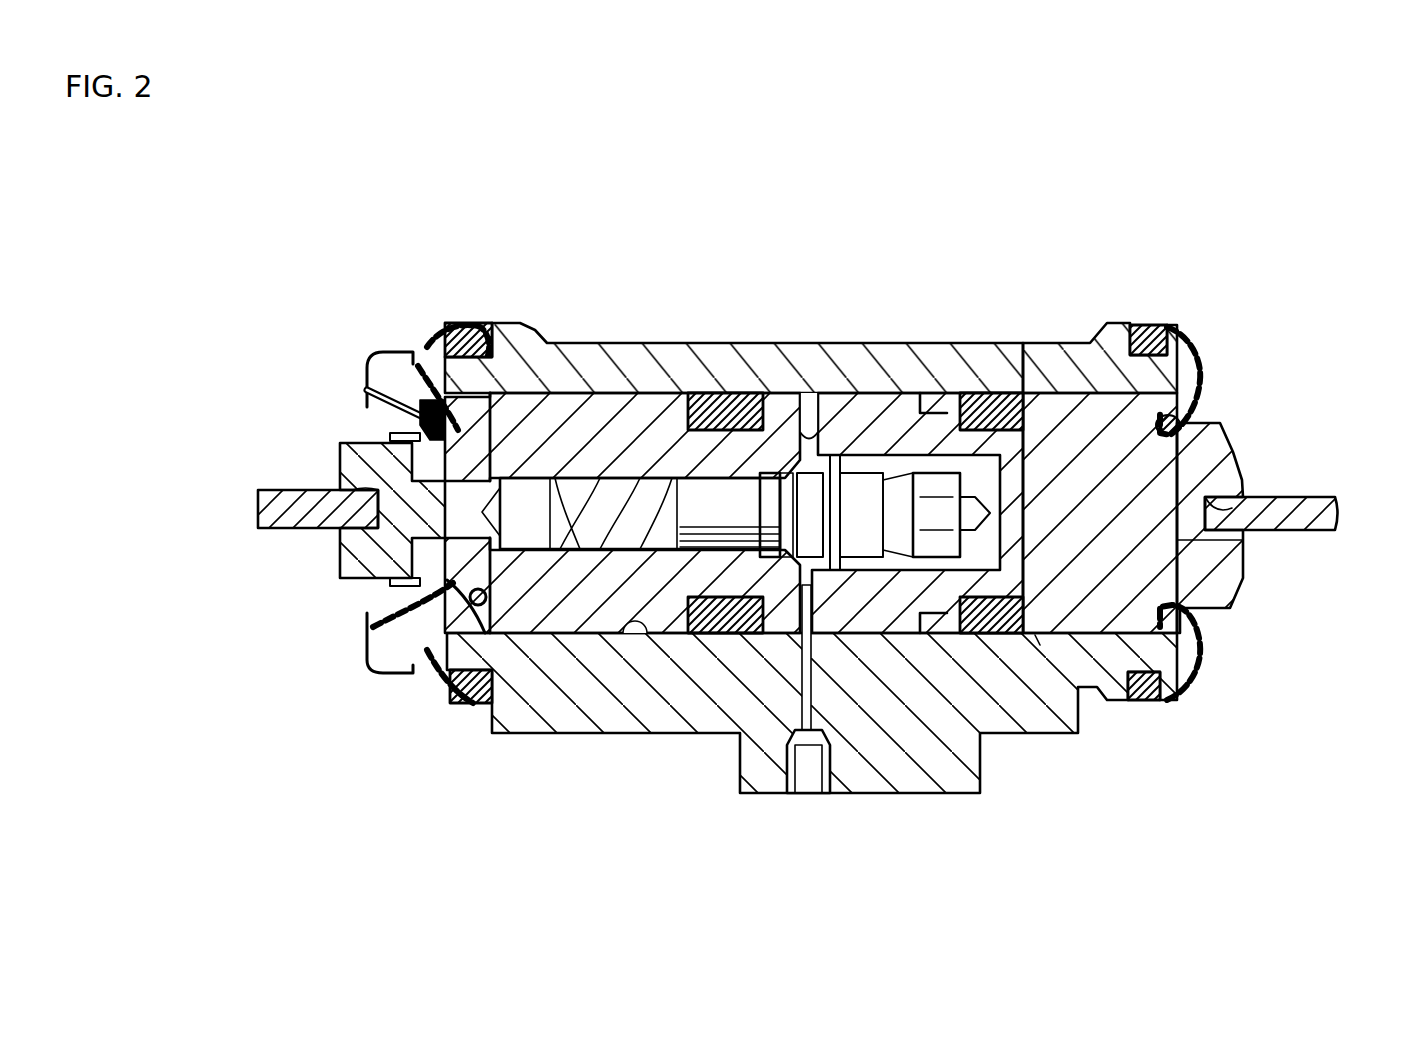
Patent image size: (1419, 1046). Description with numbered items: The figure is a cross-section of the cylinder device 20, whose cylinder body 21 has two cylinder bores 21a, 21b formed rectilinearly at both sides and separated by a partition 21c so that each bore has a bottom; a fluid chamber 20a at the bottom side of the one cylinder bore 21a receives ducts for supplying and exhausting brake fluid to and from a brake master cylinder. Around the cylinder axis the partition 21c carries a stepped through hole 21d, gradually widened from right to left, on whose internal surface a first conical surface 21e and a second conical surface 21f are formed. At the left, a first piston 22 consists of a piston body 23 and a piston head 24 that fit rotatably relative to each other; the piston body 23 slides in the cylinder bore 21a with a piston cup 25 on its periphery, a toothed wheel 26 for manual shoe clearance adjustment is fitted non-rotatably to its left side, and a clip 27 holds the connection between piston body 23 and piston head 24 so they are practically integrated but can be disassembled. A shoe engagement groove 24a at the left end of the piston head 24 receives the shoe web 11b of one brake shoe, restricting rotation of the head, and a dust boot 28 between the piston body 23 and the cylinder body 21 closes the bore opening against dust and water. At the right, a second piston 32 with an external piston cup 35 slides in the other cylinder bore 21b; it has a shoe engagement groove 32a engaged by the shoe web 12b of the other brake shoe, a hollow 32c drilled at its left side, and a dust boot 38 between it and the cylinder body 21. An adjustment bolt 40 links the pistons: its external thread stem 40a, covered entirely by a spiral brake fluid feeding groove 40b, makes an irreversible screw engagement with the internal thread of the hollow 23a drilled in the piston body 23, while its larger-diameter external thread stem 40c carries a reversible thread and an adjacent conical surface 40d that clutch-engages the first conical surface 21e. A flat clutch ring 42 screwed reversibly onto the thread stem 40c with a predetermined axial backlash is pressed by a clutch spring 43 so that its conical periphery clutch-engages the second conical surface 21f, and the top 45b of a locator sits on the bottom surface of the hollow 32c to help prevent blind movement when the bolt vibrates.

The actuator 20 is at (625, 240).
The first piston 22 is at (519, 385).
The piston body 23 is at (604, 405).
The hollow 23a is at (447, 580).
The flat clutch ring 42 is at (725, 420).
The cylinder body 21 is at (733, 707).
The cylinder bore 21a is at (627, 640).
The cylinder bore 21b is at (1037, 647).
The partition 21c is at (860, 637).
The through hole 21d is at (843, 627).
The first conical surface 21e is at (893, 463).
The second conical surface 21f is at (805, 393).
The clutch spring 43 is at (813, 637).
The piston cup 25 is at (725, 640).
The external piston cup 35 is at (970, 640).
The second piston 32 is at (1100, 693).
The shoe engagement groove 32a is at (1253, 500).
The hollow 32c is at (1040, 530).
The shoe web 12b is at (1330, 497).
The dust boot 38 is at (1198, 375).
The piston head 24 is at (340, 562).
The shoe engagement groove 24a is at (340, 490).
The shoe web 11b is at (267, 512).
The toothed wheel 26 is at (368, 373).
The clip 27 is at (453, 440).
The dust boot 28 is at (440, 677).
The adjustment bolt 40 is at (770, 560).
The external thread stem 40a is at (620, 510).
The spiral brake fluid feeding groove 40b is at (570, 520).
The external thread stem 40c is at (860, 470).
The fluid chamber 20a is at (830, 465).
The conical surface 40d is at (913, 487).
The top of the locator 45b is at (1000, 500).